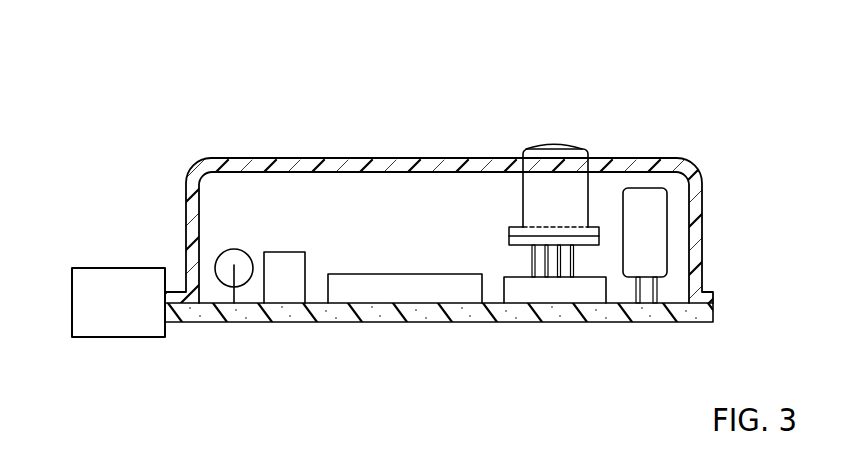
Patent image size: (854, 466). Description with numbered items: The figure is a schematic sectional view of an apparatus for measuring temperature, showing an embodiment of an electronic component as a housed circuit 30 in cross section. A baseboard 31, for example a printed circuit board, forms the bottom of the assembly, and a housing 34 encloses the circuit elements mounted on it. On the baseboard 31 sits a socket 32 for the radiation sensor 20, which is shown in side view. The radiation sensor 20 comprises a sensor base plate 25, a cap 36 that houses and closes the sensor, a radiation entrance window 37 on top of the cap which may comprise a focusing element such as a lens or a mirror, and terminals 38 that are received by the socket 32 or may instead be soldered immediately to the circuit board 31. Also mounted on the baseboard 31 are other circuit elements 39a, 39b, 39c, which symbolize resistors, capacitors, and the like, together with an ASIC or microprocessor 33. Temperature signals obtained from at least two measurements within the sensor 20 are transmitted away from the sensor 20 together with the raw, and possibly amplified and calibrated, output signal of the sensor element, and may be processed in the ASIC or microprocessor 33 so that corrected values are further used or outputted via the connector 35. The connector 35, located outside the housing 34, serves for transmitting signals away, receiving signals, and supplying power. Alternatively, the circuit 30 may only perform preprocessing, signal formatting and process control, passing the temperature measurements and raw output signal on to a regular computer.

The radiation sensor 20 is at (596, 141).
The sensor base plate 25 is at (510, 238).
The circuit 30 is at (427, 92).
The baseboard 31 is at (541, 322).
The socket 32 is at (590, 295).
The ASIC or microprocessor 33 is at (397, 294).
The housing 34 is at (272, 161).
The connector 35 is at (115, 277).
The cap 36 is at (524, 198).
The radiation entrance window 37 is at (555, 147).
The terminals 38 is at (530, 261).
The circuit element 39a is at (655, 210).
The circuit element 39b is at (284, 291).
The circuit element 39c is at (235, 250).